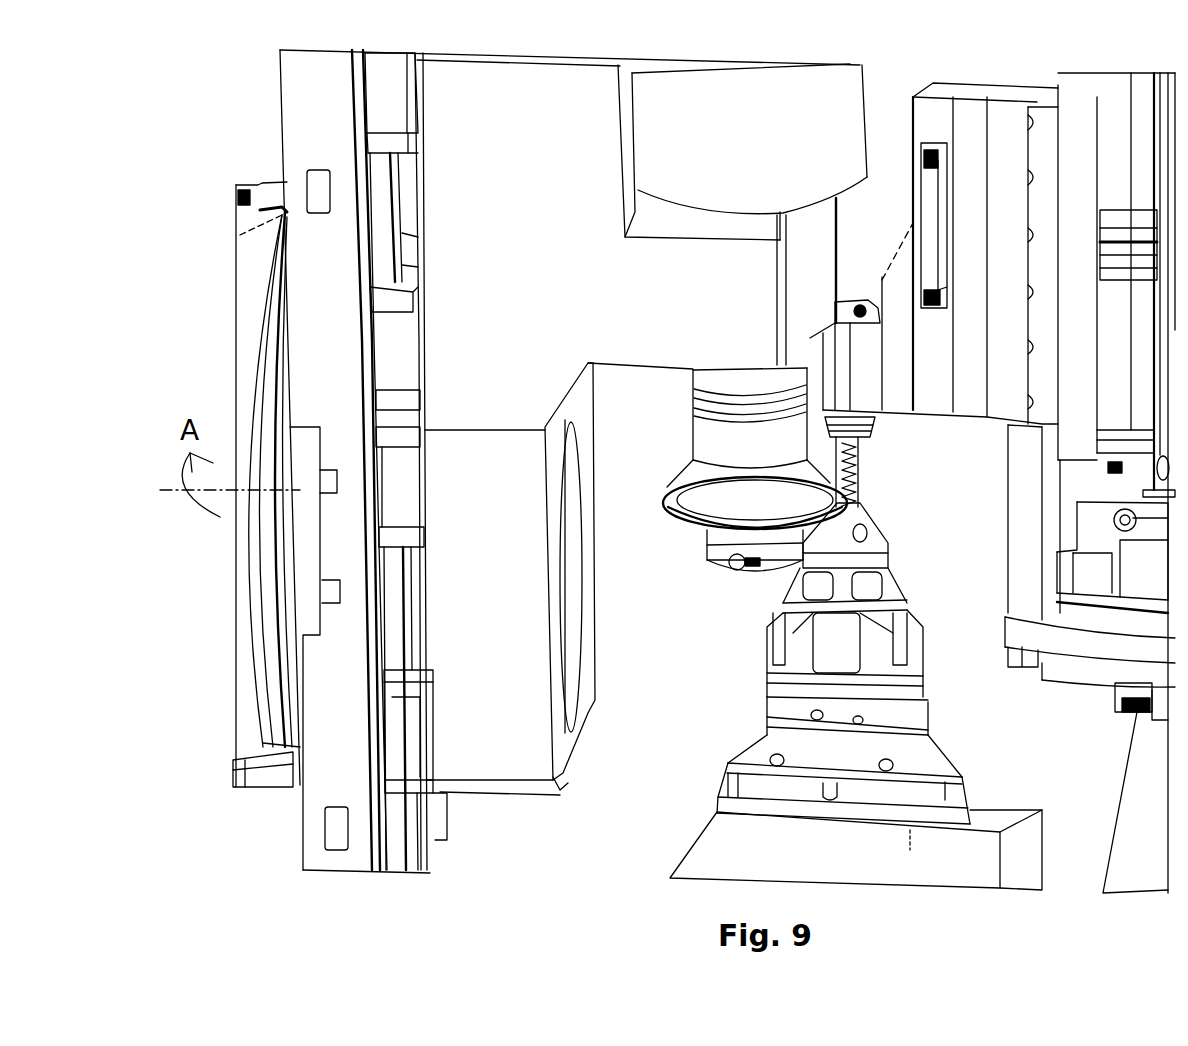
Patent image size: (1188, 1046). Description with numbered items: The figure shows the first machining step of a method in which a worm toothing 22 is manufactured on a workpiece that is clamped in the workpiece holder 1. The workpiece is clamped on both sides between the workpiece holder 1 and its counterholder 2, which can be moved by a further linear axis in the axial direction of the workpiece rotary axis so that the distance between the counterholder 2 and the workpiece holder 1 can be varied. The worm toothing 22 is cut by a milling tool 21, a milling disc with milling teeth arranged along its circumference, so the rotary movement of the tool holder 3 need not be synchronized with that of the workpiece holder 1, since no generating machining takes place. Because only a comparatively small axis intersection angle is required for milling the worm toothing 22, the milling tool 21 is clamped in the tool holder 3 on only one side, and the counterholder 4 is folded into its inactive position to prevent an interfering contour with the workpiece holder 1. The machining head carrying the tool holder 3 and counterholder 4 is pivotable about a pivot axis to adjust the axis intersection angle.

The workpiece holder 1 is at (867, 750).
The counterholder 2 is at (860, 370).
The tool holder 3 is at (738, 390).
The counterholder 4 is at (573, 663).
The milling tool 21 is at (683, 532).
The worm toothing 22 is at (890, 493).